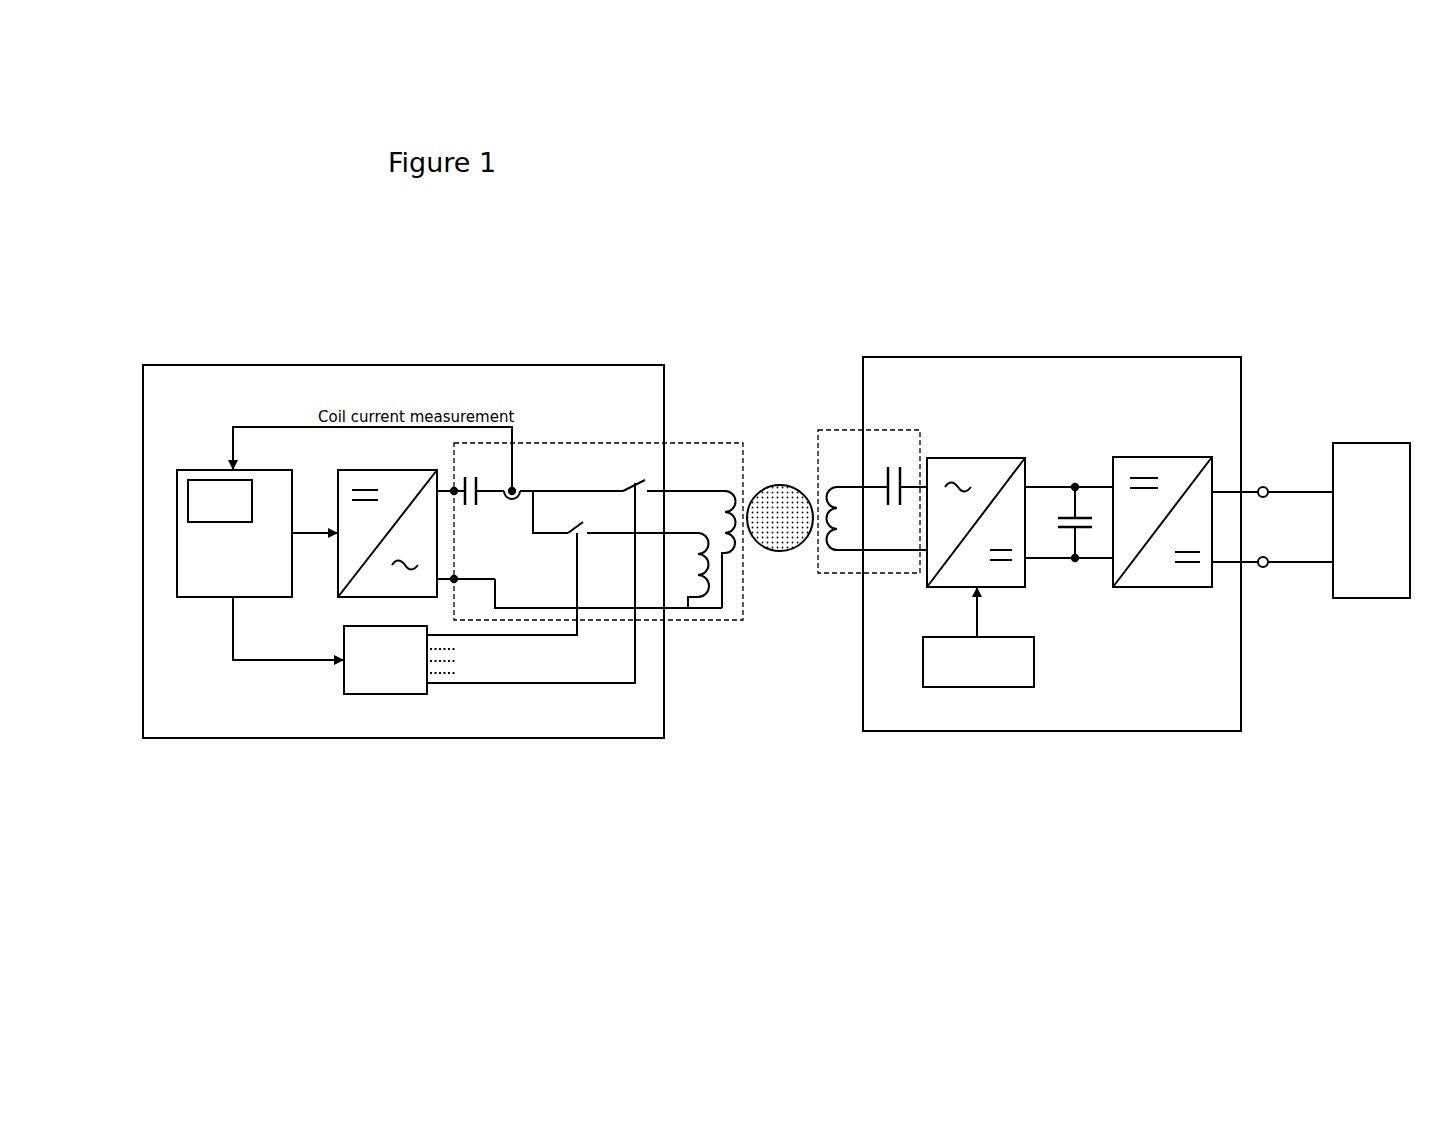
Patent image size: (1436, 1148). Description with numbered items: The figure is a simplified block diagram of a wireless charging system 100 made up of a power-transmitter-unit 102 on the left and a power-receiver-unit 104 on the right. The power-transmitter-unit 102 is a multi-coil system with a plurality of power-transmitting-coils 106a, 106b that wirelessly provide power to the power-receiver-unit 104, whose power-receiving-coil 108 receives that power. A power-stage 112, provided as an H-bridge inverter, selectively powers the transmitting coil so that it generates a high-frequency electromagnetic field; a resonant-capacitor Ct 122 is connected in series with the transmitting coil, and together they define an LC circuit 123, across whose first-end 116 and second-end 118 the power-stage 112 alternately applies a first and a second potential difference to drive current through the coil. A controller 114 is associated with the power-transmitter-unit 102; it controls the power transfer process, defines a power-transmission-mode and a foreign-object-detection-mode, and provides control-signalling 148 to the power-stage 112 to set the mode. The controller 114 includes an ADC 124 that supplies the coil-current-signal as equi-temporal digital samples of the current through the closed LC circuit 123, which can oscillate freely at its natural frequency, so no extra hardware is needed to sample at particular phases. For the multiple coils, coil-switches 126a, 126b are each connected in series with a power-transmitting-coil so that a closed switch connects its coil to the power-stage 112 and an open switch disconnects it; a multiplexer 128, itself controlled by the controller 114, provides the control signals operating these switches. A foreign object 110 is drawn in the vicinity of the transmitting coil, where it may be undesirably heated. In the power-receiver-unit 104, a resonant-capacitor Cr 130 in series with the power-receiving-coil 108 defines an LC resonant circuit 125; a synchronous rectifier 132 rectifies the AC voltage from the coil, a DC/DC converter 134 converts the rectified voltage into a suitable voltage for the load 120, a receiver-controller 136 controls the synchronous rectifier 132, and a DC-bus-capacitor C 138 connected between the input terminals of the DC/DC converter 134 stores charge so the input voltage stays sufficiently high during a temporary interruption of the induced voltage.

The wireless charging system 100 is at (850, 258).
The power-transmitter-unit 102 is at (433, 366).
The power-receiver-unit 104 is at (1010, 357).
The power-transmitting-coil 106a is at (733, 553).
The power-transmitting-coil 106b is at (690, 600).
The power-receiving-coil 108 is at (837, 551).
The foreign object 110 is at (780, 551).
The power-stage 112 is at (350, 597).
The controller 114 is at (203, 598).
The first-end 116 is at (455, 489).
The second-end 118 is at (455, 582).
The load 120 is at (1370, 443).
The resonant-capacitor Ct 122 is at (478, 485).
The LC circuit 123 is at (598, 442).
The ADC 124 is at (207, 480).
The LC resonant circuit 125 is at (838, 428).
The coil-switch 126a is at (640, 458).
The coil-switch 126b is at (585, 540).
The multiplexer (MUX) 128 is at (412, 694).
The resonant-capacitor Cr 130 is at (887, 495).
The synchronous rectifier 132 is at (1025, 587).
The DC/DC converter 134 is at (1180, 587).
The receiver-controller 136 is at (993, 687).
The DC-bus-capacitor C 138 is at (1083, 530).
The control-signalling 148 is at (317, 530).